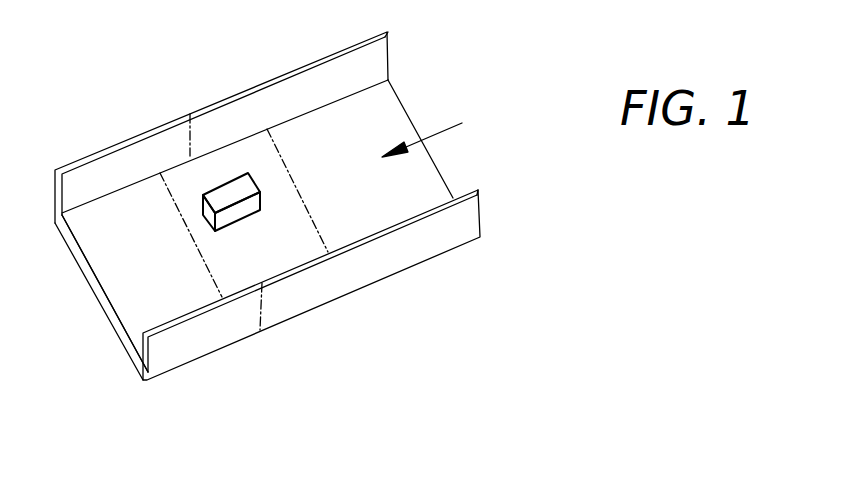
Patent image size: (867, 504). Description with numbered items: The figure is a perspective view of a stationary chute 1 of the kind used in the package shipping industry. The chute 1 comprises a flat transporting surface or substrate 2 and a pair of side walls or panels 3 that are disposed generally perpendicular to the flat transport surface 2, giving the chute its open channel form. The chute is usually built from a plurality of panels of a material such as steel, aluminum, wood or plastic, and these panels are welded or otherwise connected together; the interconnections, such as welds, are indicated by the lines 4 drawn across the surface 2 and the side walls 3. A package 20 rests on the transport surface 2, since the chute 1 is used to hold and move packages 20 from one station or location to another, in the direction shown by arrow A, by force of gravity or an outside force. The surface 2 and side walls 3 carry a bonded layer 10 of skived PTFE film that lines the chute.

The stationary chute 1 is at (152, 54).
The transporting surface 2 is at (117, 325).
The side walls 3 is at (325, 73).
The lines 4 is at (195, 117).
The layer of skived PTFE film 10 is at (87, 173).
The packages 20 is at (238, 211).